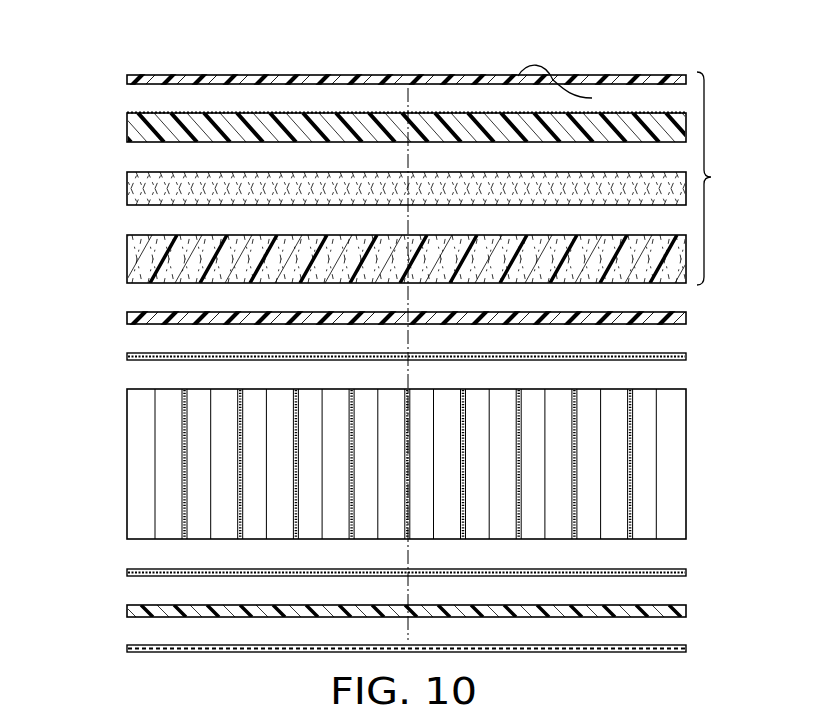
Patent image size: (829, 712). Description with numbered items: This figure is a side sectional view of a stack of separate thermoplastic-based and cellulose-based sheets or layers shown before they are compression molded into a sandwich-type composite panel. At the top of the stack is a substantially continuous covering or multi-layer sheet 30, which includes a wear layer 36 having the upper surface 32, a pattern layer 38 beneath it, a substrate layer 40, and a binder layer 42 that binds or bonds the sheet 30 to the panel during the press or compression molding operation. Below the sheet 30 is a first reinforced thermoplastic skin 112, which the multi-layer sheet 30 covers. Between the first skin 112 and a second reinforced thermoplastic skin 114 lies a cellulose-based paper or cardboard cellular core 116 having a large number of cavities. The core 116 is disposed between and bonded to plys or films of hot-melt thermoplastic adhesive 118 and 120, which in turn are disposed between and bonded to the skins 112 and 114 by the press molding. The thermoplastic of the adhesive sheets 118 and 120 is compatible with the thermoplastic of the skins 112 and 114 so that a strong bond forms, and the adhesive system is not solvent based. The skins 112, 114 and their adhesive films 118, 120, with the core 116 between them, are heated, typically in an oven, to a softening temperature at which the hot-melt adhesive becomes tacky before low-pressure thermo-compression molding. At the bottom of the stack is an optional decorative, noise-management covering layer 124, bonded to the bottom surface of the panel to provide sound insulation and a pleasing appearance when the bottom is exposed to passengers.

The multi-layer sheet 30 is at (717, 178).
The upper surface 32 is at (568, 88).
The wear layer 36 is at (127, 83).
The pattern layer 38 is at (127, 131).
The substrate layer 40 is at (127, 188).
The binder layer 42 is at (127, 258).
The first reinforced thermoplastic skin 112 is at (127, 320).
The second reinforced thermoplastic skin 114 is at (127, 608).
The cellular core 116 is at (127, 463).
The hot-melt adhesive sheet 118 is at (127, 357).
The hot-melt adhesive sheet 120 is at (127, 572).
The covering layer 124 is at (127, 648).